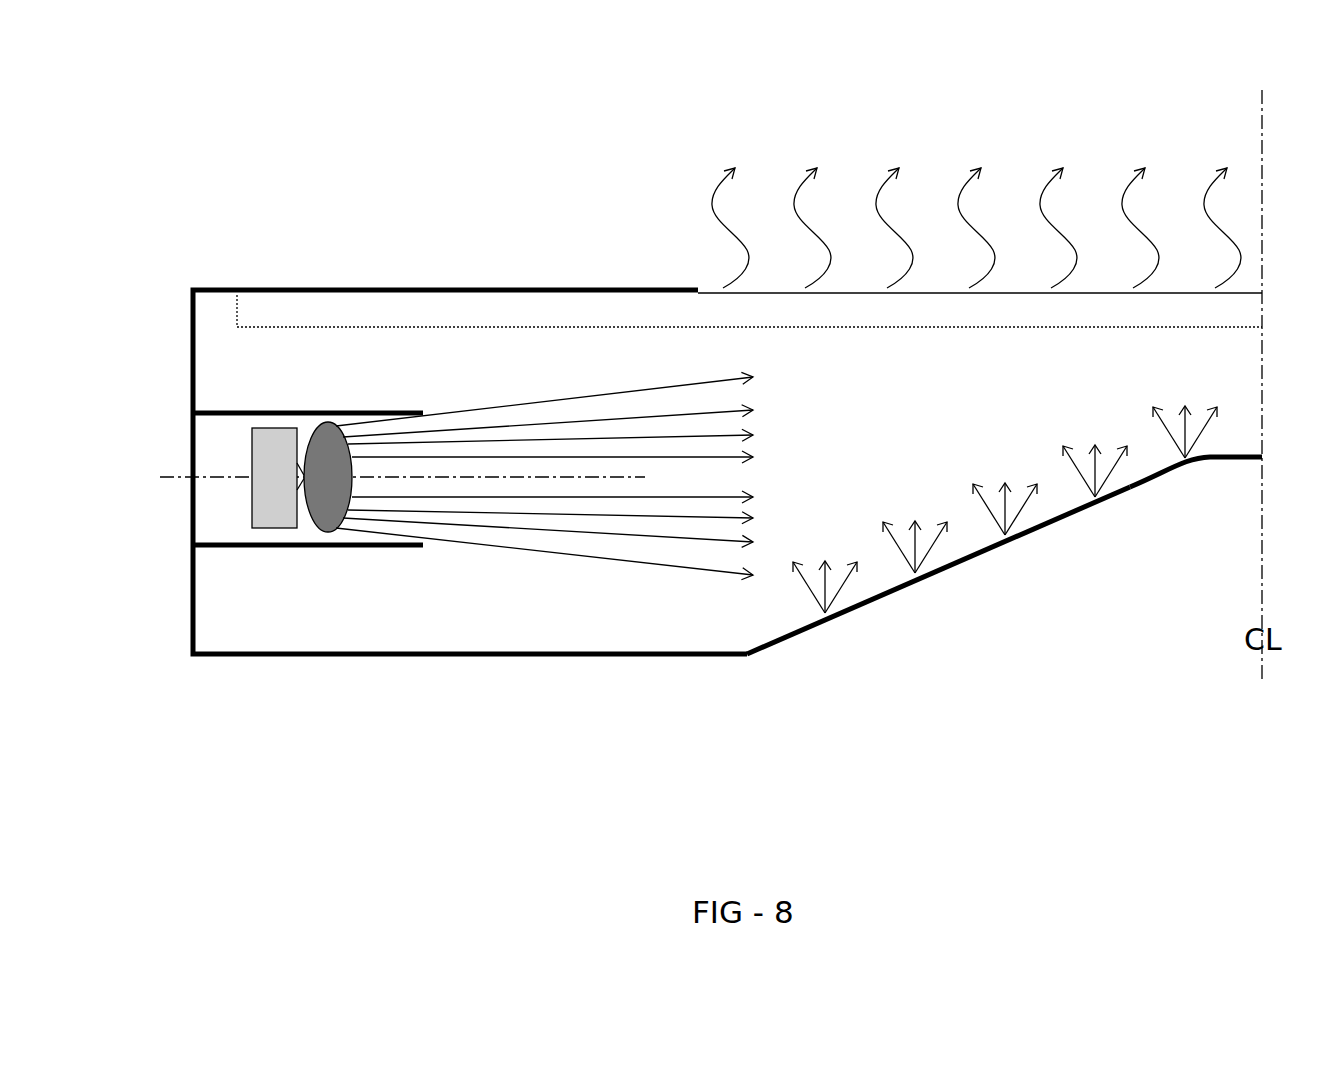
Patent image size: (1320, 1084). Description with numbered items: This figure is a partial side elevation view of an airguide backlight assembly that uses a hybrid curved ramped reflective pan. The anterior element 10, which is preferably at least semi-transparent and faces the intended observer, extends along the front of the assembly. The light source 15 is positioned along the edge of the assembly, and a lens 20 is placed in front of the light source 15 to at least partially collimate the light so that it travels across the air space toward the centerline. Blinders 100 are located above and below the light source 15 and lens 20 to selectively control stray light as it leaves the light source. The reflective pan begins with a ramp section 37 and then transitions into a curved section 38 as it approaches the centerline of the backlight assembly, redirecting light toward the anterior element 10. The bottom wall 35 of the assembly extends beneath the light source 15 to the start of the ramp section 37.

The anterior element 10 is at (749, 247).
The light source 15 is at (272, 455).
The lens 20 is at (345, 530).
The housing bottom wall 35 is at (587, 656).
The ramp section 37 is at (955, 573).
The curved section 38 is at (1208, 465).
The blinders 100 is at (215, 540).